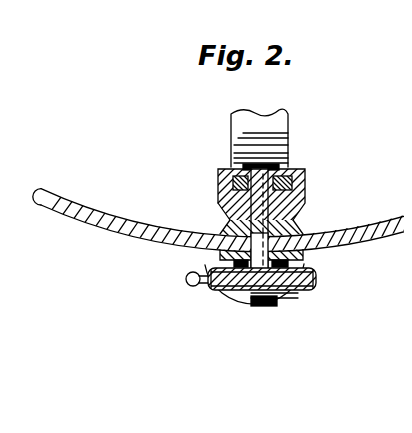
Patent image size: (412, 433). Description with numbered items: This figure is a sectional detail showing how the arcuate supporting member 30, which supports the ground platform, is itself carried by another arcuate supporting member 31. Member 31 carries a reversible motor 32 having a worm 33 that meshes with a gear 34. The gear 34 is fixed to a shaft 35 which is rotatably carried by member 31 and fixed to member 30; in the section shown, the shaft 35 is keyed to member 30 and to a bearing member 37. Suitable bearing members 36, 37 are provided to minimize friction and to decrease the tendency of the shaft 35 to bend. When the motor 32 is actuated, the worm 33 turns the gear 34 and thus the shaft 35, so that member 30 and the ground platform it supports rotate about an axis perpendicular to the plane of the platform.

The arcuate supporting member 30 is at (70, 196).
The arcuate supporting member 31 is at (223, 117).
The reversible motor 32 is at (234, 292).
The worm 33 is at (183, 279).
The gear 34 is at (298, 287).
The shaft 35 is at (306, 179).
The bearing member 36 is at (212, 182).
The bearing member 37 is at (222, 217).